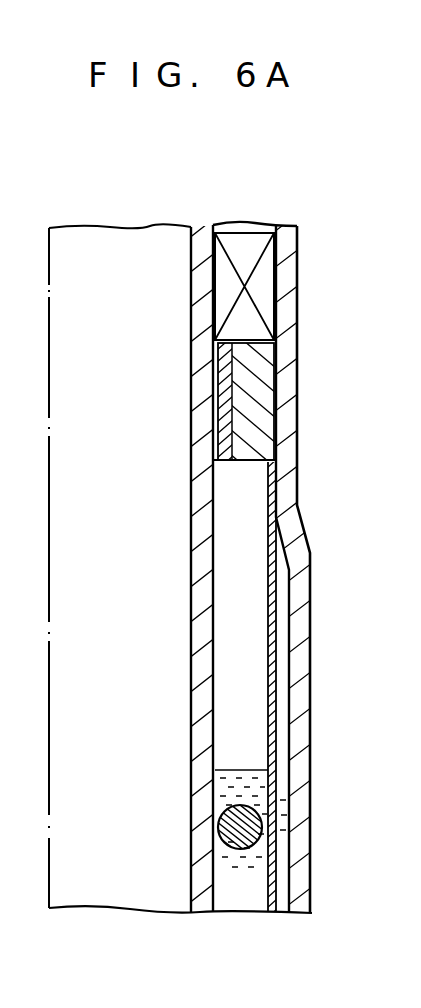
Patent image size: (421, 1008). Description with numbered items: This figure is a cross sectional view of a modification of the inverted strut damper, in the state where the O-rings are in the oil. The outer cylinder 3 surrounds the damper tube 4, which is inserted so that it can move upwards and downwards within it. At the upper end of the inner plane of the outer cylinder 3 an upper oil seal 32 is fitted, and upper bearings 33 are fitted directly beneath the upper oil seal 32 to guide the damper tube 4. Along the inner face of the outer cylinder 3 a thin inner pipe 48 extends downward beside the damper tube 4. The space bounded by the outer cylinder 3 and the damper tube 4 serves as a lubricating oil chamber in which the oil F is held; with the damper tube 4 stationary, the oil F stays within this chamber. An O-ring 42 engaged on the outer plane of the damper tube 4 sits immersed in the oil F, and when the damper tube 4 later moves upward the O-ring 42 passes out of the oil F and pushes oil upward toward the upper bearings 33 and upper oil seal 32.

The outer cylinder 3 is at (299, 266).
The damper tube 4 is at (190, 268).
The upper oil seal 32 is at (252, 312).
The upper bearings 33 is at (278, 398).
The inner pipe 48 is at (273, 703).
The O-ring 42 is at (252, 825).
The oil F is at (258, 890).